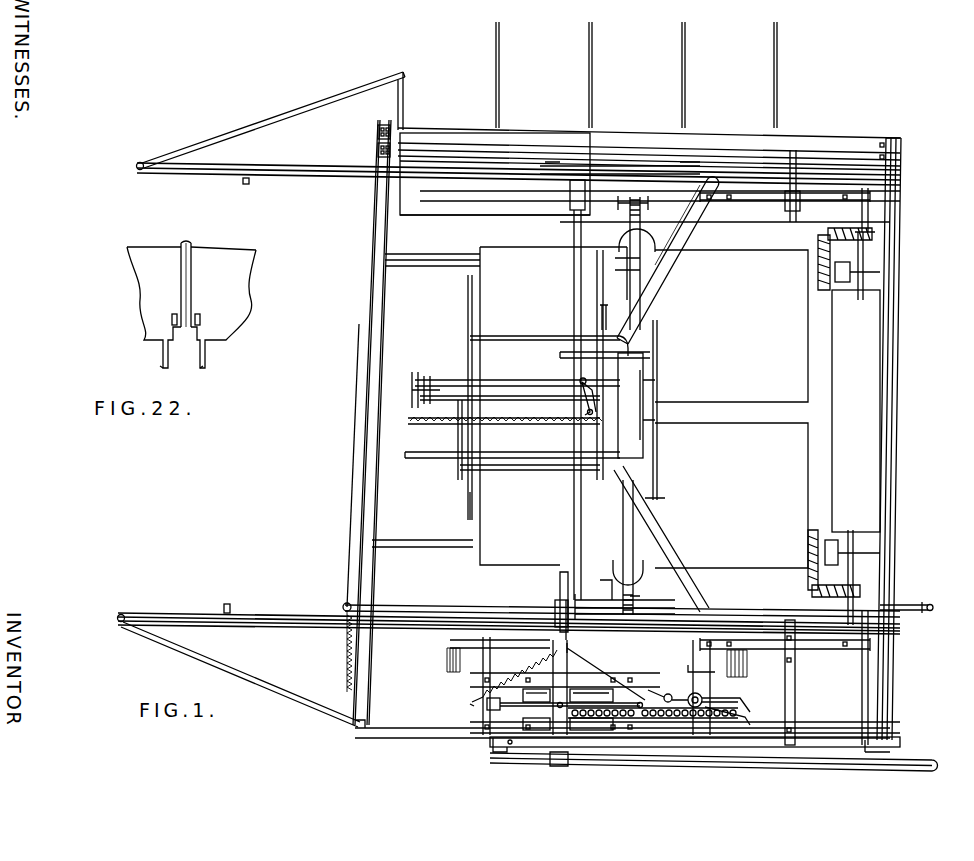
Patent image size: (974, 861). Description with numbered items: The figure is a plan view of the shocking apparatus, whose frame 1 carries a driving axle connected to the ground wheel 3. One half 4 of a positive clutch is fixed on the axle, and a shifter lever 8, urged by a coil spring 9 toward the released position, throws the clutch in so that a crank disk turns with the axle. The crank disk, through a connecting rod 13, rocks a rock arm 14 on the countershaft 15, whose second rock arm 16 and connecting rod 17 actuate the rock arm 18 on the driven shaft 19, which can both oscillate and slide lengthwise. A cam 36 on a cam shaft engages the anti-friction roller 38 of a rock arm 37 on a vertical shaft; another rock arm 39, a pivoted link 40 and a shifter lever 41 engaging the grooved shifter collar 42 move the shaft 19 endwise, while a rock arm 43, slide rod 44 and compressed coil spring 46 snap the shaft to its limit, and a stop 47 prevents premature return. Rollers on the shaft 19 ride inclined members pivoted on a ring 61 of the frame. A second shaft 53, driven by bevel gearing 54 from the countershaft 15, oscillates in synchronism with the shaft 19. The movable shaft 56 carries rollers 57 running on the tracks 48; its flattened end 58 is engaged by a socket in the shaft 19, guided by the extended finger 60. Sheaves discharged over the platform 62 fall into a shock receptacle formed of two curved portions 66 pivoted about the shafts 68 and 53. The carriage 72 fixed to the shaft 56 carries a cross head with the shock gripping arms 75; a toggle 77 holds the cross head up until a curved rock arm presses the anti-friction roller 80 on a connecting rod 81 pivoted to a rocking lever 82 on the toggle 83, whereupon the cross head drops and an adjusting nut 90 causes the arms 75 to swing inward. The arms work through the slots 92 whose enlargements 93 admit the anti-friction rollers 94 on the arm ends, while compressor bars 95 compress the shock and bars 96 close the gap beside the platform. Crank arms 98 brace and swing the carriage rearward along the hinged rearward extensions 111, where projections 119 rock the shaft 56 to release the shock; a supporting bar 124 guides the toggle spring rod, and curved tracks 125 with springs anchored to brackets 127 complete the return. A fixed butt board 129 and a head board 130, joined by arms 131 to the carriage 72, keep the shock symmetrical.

In FIG. 1, the frame 1 is at (899, 203).
In FIG. 1, the ground wheel 3 is at (425, 657).
In FIG. 1, the clutch half 4 is at (592, 599).
In FIG. 1, the shifter lever 8 is at (436, 604).
In FIG. 1, the coil spring 9 is at (345, 643).
In FIG. 1, the connecting rod 13 is at (910, 616).
In FIG. 1, the rock arm 14 is at (899, 606).
In FIG. 1, the countershaft 15 is at (862, 550).
In FIG. 1, the second rock arm 16 is at (880, 757).
In FIG. 1, the connecting rod 17 is at (797, 767).
In FIG. 1, the rock arm 18 is at (613, 763).
In FIG. 1, the driven shaft 19 is at (560, 633).
In FIG. 1, the cam 36 is at (737, 678).
In FIG. 1, the rock arm 37 is at (668, 705).
In FIG. 1, the anti-friction roller 38 is at (712, 706).
In FIG. 1, the rock arm 39 is at (660, 719).
In FIG. 1, the pivoted link 40 is at (603, 737).
In FIG. 1, the shifter lever 41 is at (527, 723).
In FIG. 1, the grooved shifter collar 42 is at (557, 727).
In FIG. 1, the rock arm 43 is at (564, 579).
In FIG. 1, the slide rod 44 is at (472, 702).
In FIG. 1, the coil spring 46 is at (470, 691).
In FIG. 1, the stop 47 is at (746, 720).
In FIG. 1, the tracks 48 is at (621, 201).
In FIG. 1, the second shaft 53 is at (426, 540).
In FIG. 1, the bevel gearing 54 is at (809, 592).
In FIG. 1, the movable shaft 56 is at (556, 489).
In FIG. 1, the rollers 57 is at (556, 180).
In FIG. 1, the flattened end 58 is at (566, 633).
In FIG. 1, the extended finger 60 is at (522, 641).
In FIG. 1, the ring 61 is at (500, 747).
In FIG. 1, the platform 62 is at (424, 216).
In FIG. 1, the curved portion 66 is at (796, 401).
In FIG. 1, the shaft 68 is at (436, 267).
In FIG. 1, the carriage 72 is at (575, 355).
In FIG. 1, the shock gripping arms 75 is at (641, 217).
In FIG. 1, the toggle 77 is at (562, 441).
In FIG. 1, the anti-friction roller 80 is at (440, 401).
In FIG. 1, the connecting rod 81 is at (441, 379).
In FIG. 1, the rocking lever 82 is at (640, 402).
In FIG. 1, the toggle 83 is at (521, 394).
In FIG. 1, the adjusting nut 90 is at (649, 397).
In FIG. 22, the slots 92 is at (179, 280).
In FIG. 1, the slots 92 is at (632, 265).
In FIG. 22, the enlargement 93 is at (181, 374).
In FIG. 22, the anti-friction rollers 94 is at (200, 323).
In FIG. 1, the compressor bars 95 is at (601, 313).
In FIG. 1, the bars 96 is at (497, 90).
In FIG. 1, the crank arms 98 is at (672, 277).
In FIG. 1, the hinged rearward extensions 111 is at (372, 184).
In FIG. 1, the projections 119 is at (226, 611).
In FIG. 1, the supporting bar 124 is at (410, 457).
In FIG. 1, the curved tracks 125 is at (846, 202).
In FIG. 1, the bracket 127 is at (789, 200).
In FIG. 1, the butt board 129 is at (850, 503).
In FIG. 1, the head board 130 is at (462, 496).
In FIG. 1, the arms 131 is at (497, 335).